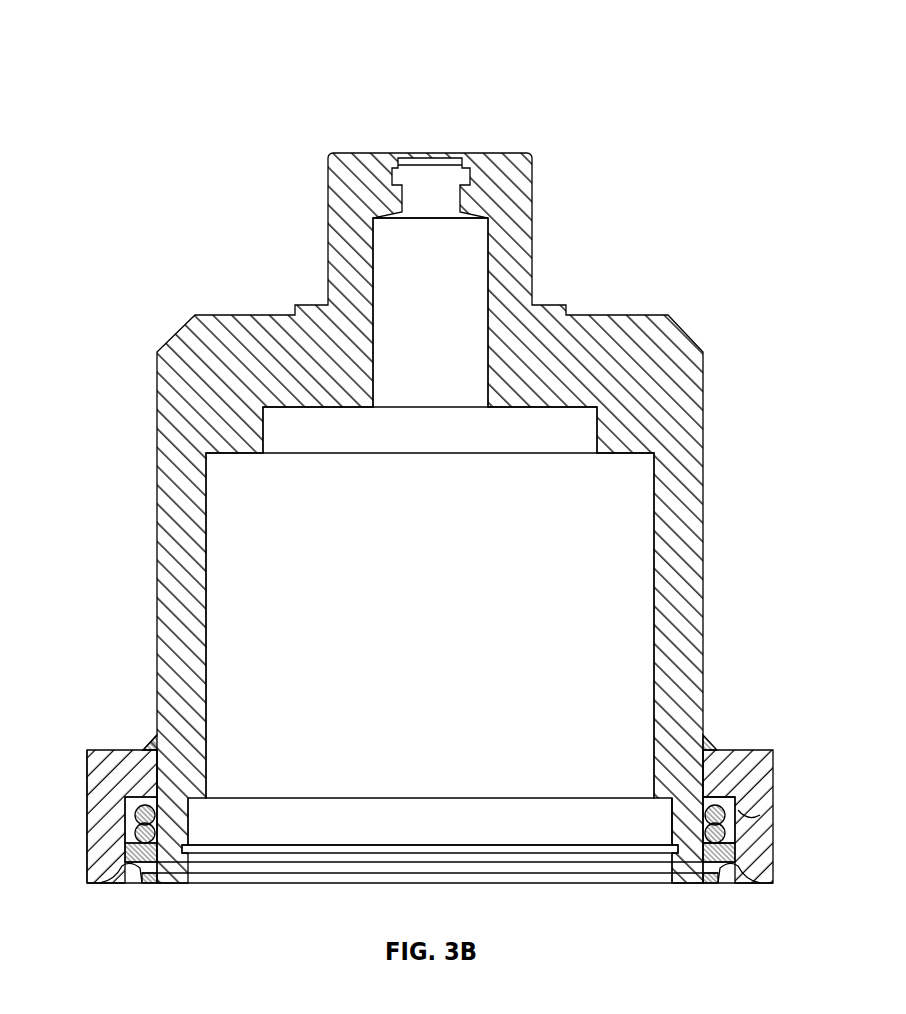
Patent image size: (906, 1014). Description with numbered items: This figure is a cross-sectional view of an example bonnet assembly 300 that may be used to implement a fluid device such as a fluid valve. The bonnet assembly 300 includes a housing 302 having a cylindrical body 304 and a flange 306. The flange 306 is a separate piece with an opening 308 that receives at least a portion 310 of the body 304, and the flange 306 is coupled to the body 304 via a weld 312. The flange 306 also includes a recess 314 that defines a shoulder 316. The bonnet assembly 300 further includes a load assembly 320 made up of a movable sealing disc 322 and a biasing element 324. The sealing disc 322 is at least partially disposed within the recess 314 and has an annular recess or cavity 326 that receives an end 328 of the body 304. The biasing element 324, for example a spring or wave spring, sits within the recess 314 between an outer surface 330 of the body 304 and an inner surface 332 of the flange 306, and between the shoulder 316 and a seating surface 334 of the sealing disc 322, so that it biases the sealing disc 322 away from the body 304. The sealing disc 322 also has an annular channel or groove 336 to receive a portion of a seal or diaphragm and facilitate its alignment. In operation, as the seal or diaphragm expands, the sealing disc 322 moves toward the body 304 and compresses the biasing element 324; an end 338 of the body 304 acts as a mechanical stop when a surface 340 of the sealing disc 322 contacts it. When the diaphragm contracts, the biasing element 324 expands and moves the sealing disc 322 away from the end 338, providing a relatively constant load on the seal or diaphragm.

The bonnet assembly 300 is at (216, 78).
The housing 302 is at (148, 360).
The cylindrical body 304 is at (158, 418).
The flange 306 is at (87, 778).
The opening 308 is at (132, 888).
The portion of the body 310 is at (170, 772).
The weld 312 is at (155, 742).
The recess 314 is at (122, 820).
The shoulder 316 is at (725, 798).
The load assembly 320 is at (82, 816).
The sealing disc 322 is at (735, 845).
The biasing element 324 is at (742, 818).
The annular recess or cavity 326 is at (693, 865).
The end of the body 328 is at (188, 843).
The outer surface of the body 330 is at (703, 800).
The inner surface of the flange 332 is at (730, 797).
The seating surface 334 is at (672, 818).
The annular channel or groove 336 is at (125, 867).
The end of the body 338 is at (703, 860).
The surface of the sealing disc 340 is at (683, 885).